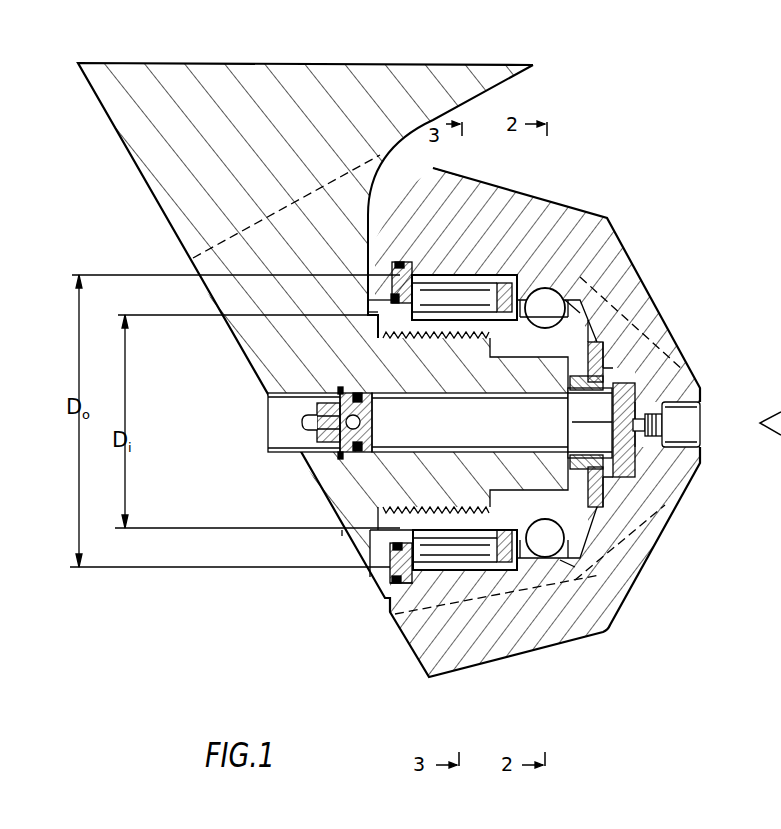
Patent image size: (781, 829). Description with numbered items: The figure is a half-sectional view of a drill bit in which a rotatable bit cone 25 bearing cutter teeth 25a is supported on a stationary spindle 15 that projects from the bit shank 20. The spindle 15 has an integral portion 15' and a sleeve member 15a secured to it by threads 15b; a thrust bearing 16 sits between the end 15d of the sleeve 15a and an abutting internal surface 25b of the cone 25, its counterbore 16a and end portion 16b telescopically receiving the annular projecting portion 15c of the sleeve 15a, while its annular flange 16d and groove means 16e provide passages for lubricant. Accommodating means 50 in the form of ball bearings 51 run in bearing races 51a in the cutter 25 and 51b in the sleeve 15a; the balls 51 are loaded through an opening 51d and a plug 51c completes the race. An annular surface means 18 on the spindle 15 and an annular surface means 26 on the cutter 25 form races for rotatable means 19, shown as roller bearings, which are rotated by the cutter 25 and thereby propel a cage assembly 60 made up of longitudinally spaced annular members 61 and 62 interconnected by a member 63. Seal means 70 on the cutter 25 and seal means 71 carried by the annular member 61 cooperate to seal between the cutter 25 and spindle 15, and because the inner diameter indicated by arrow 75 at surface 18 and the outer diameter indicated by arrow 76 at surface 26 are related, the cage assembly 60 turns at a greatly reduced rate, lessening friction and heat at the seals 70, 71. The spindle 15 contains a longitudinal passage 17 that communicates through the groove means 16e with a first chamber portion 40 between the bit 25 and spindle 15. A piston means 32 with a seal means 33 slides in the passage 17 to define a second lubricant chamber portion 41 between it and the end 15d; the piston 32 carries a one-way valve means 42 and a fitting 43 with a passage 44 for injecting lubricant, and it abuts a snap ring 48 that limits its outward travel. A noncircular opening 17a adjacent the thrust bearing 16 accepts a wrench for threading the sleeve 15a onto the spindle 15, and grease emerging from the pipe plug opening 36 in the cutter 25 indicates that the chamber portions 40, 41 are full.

The spindle 15 is at (323, 534).
The spindle portion 15' is at (289, 568).
The sleeve member 15a is at (642, 308).
The threads 15b is at (362, 540).
The annular projecting portion 15c is at (637, 388).
The end of sleeve 15d is at (632, 465).
The thrust bearing 16 is at (660, 400).
The counterbore 16a is at (597, 483).
The end portion 16b is at (600, 455).
The annular flange 16d is at (618, 550).
The groove means 16e is at (637, 370).
The longitudinal passage 17 is at (290, 400).
The noncircular opening 17a is at (670, 415).
The annular surface means 18 is at (560, 205).
The rotatable means 19 is at (465, 550).
The bit shank 20 is at (143, 152).
The bit cone 25 is at (590, 222).
The cutter teeth 25a is at (605, 352).
The internal surface 25b is at (640, 400).
The annular surface means 26 is at (392, 612).
The piston means 32 is at (340, 452).
The seal means 33 is at (358, 392).
The pipe plug opening 36 is at (622, 442).
The first chamber portion 40 is at (578, 305).
The second lubricant chamber portion 41 is at (492, 423).
The valve means 42 is at (368, 423).
The fitting 43 is at (335, 440).
The passage 44 is at (307, 427).
The snap ring 48 is at (338, 392).
The accommodating means 50 is at (548, 556).
The ball bearings 51 is at (557, 315).
The bearing race 51a is at (540, 563).
The bearing race 51b is at (548, 330).
The plug 51c is at (505, 562).
The opening 51d is at (578, 568).
The cage assembly 60 is at (453, 273).
The annular member 61 is at (390, 302).
The annular member 62 is at (412, 340).
The longitudinal member 63 is at (462, 293).
The seal means 70 is at (400, 262).
The seal means 71 is at (368, 312).
The arrow 75 is at (128, 460).
The arrow 76 is at (85, 367).